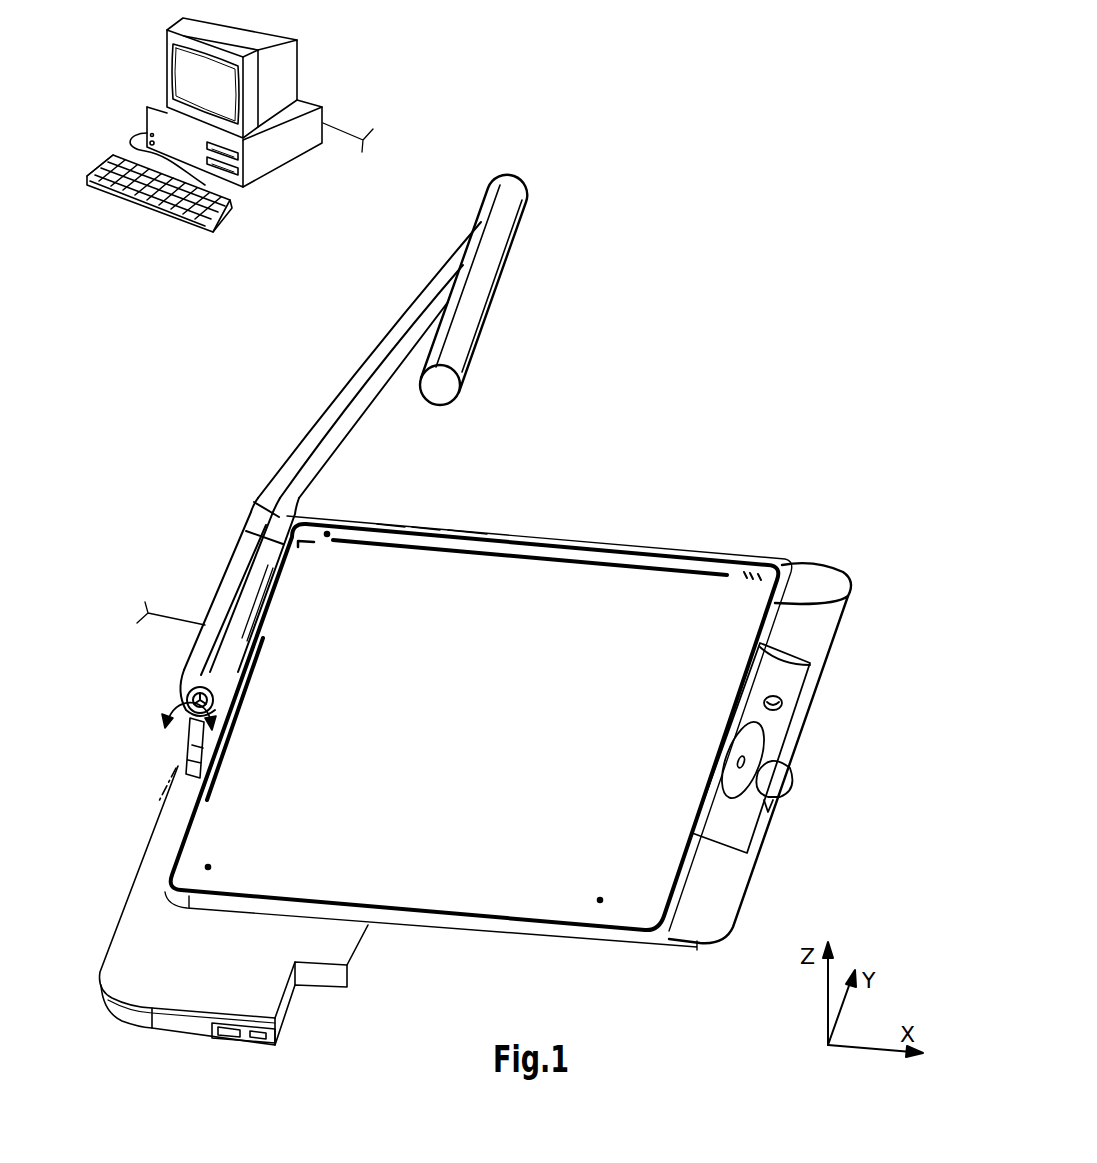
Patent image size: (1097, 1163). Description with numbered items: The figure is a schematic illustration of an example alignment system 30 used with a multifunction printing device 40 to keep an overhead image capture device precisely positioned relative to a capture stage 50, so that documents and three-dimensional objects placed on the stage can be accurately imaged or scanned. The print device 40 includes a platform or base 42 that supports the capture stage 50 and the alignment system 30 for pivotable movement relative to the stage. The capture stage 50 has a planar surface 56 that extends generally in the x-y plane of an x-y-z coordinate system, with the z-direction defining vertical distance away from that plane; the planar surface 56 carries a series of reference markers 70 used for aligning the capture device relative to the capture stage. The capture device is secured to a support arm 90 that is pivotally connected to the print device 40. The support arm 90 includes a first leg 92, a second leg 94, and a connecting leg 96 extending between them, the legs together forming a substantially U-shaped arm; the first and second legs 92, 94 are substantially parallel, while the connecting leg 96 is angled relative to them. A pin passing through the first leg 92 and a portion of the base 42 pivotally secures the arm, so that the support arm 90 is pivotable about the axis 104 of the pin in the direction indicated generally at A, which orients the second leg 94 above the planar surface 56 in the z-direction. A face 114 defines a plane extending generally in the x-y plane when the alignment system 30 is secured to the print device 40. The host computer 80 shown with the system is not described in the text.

The alignment system 30 is at (722, 330).
The multifunction printing device 40 is at (110, 1035).
The base 42 is at (153, 860).
The capture stage 50 is at (532, 590).
The planar surface 56 is at (830, 604).
The reference markers 70 is at (330, 533).
The host computer 80 is at (253, 82).
The support arm 90 is at (314, 398).
The first leg 92 is at (223, 590).
The second leg 94 is at (491, 247).
The connecting leg 96 is at (384, 354).
The axis 104 is at (185, 767).
The face 114 is at (503, 270).
The direction of pivoting A is at (165, 710).